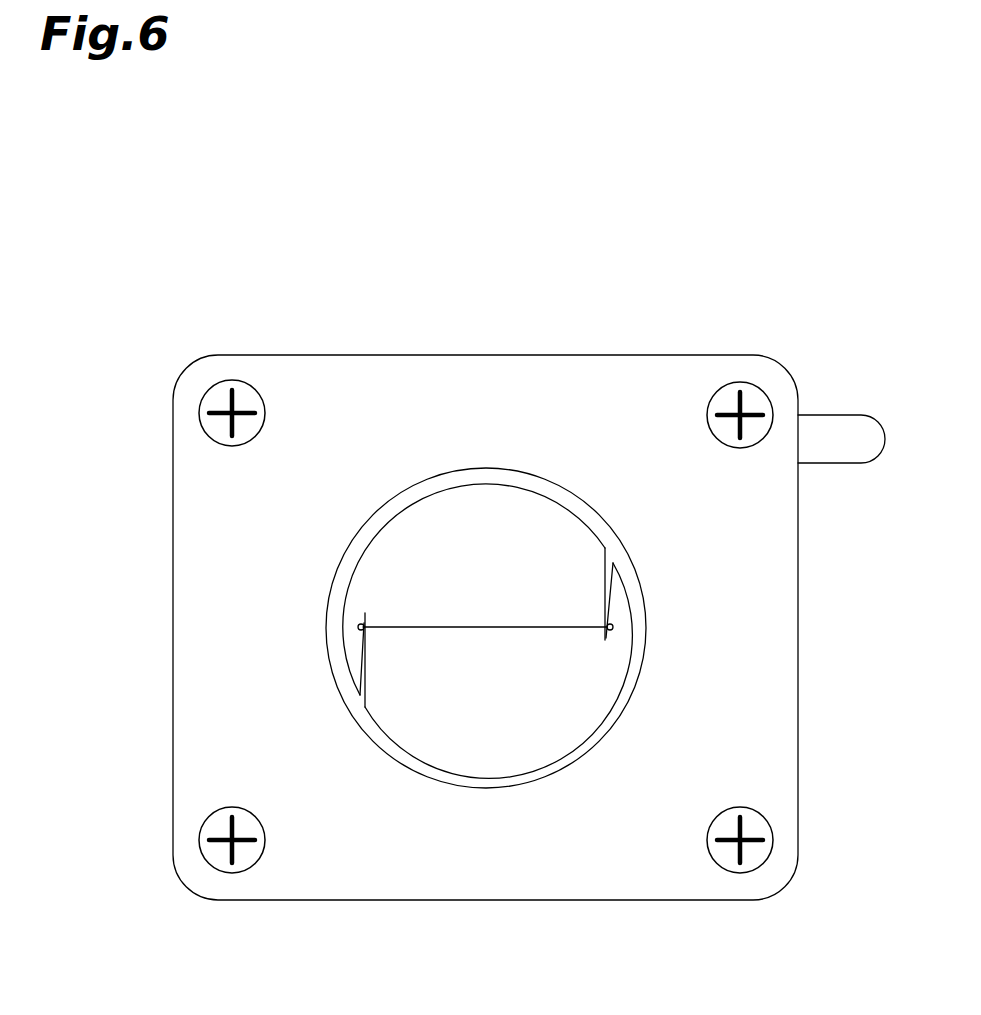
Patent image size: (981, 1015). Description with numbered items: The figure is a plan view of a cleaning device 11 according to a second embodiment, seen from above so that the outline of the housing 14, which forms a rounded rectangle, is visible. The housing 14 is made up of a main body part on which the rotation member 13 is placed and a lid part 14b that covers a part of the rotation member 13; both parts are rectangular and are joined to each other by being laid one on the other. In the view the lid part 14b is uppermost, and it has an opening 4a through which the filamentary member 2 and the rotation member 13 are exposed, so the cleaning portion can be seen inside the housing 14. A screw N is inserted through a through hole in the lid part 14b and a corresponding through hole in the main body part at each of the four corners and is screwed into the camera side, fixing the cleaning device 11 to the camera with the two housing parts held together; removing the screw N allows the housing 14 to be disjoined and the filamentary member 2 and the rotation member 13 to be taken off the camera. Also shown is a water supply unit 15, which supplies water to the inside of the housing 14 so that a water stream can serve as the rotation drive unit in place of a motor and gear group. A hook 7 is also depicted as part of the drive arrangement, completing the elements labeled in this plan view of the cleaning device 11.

The cleaning device 11 is at (752, 241).
The housing 14 is at (572, 357).
The lid part 14b is at (668, 398).
The water supply unit 15 is at (840, 437).
The screw N is at (217, 400).
The rotation member 13 is at (497, 470).
The opening 4a is at (400, 490).
The hook 7 is at (604, 597).
The filamentary member 2 is at (483, 624).